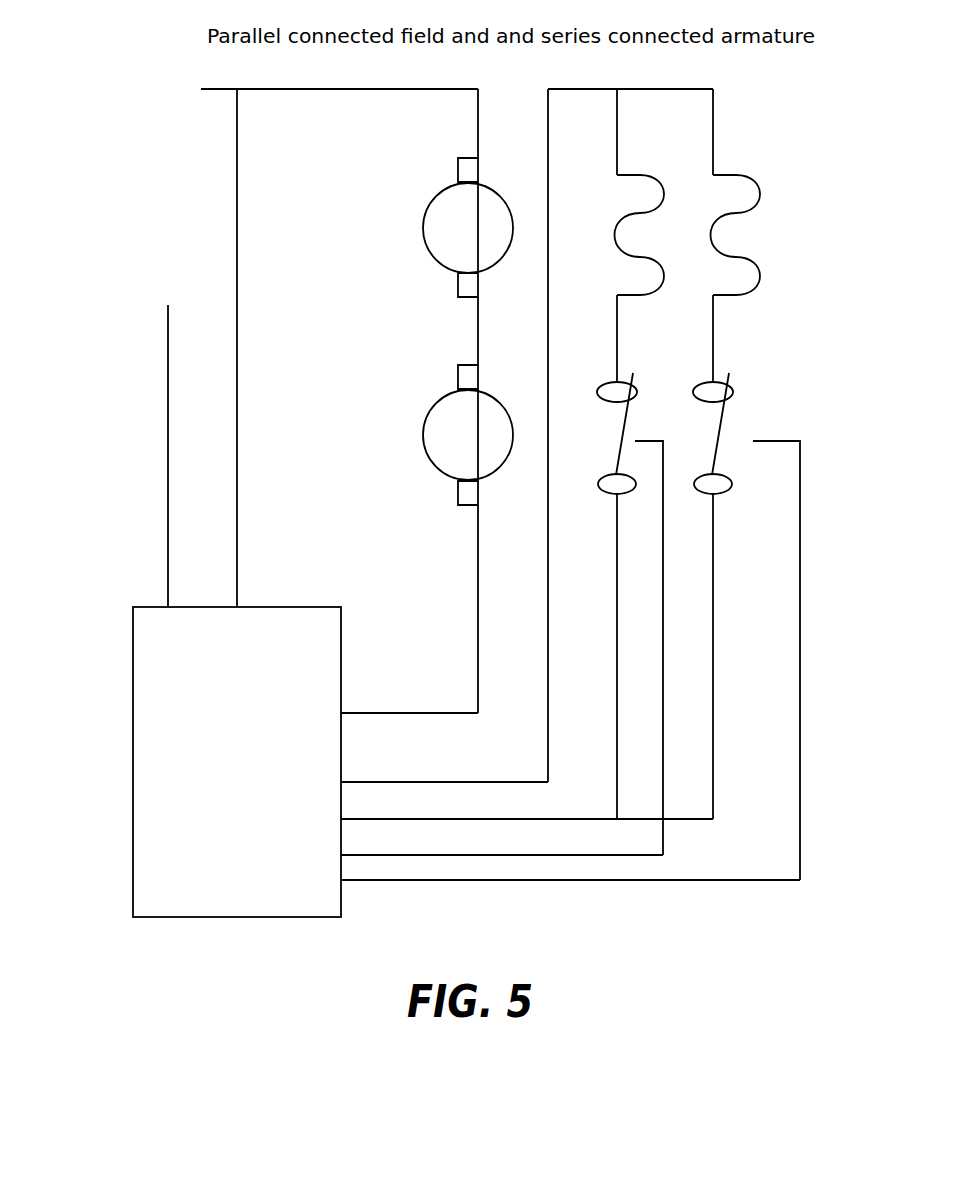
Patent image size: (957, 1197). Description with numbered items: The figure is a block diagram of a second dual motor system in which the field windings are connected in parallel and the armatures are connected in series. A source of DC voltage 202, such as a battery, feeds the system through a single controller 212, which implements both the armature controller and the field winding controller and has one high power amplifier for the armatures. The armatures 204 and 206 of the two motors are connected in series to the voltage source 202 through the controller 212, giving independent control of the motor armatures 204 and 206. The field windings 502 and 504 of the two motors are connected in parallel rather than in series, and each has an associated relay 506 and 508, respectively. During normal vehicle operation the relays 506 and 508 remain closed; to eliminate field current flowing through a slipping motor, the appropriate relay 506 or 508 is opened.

The source of DC voltage 202 is at (110, 181).
The armature 204 is at (423, 223).
The armature 206 is at (427, 416).
The controller 212 is at (133, 644).
The field winding 502 is at (627, 168).
The field winding 504 is at (735, 168).
The relay 506 is at (623, 360).
The relay 508 is at (725, 360).